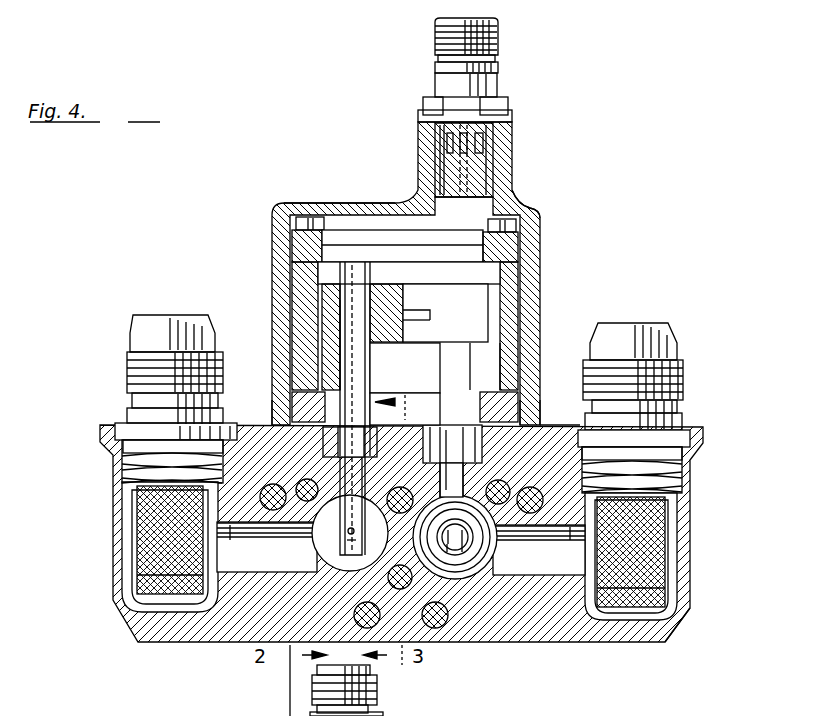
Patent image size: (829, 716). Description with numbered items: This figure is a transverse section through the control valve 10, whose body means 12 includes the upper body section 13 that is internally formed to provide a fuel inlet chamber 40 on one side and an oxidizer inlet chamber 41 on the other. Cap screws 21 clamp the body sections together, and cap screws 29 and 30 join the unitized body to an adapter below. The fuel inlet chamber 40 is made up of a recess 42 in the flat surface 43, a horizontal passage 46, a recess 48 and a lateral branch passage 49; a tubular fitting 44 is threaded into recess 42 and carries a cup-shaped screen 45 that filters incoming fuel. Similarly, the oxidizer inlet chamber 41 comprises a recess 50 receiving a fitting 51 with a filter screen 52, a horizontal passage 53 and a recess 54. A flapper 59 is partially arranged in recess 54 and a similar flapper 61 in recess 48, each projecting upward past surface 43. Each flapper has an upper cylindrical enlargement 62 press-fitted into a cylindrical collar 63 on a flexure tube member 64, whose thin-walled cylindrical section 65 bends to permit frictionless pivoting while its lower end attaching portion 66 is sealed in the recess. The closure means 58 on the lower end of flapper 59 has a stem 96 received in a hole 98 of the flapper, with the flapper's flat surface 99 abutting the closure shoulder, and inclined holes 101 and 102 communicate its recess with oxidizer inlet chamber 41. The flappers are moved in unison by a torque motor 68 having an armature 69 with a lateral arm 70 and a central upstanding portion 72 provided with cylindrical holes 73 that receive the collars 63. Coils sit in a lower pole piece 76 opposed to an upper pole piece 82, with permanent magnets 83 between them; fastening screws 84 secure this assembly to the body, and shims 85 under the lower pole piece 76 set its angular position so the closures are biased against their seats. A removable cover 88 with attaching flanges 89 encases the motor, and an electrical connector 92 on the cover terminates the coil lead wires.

The control valve 10 is at (285, 183).
The body means 12 is at (672, 652).
The first or upper body section 13 is at (690, 625).
The cap screws 21 is at (303, 523).
The cap screws 29 is at (260, 523).
The cap screws 30 is at (365, 628).
The fuel inlet chamber 40 is at (287, 573).
The oxidizer inlet chamber 41 is at (542, 575).
The recess 42 is at (132, 533).
The flat surface 43 is at (262, 420).
The fitting 44 is at (128, 396).
The cup-shaped screen 45 is at (140, 560).
The horizontal passage 46 is at (232, 543).
The recess 48 is at (328, 491).
The lateral branch passage 49 is at (339, 510).
The recess 50 is at (690, 530).
The fitting 51 is at (680, 402).
The filter screen 52 is at (688, 568).
The horizontal passage 53 is at (567, 543).
The recess 54 is at (452, 461).
The closure means 58 is at (488, 578).
The flapper 59 is at (545, 435).
The flapper 61 is at (366, 357).
The cylindrical enlargement 62 is at (356, 270).
The cylindrical collar 63 is at (378, 288).
The flexure tube member 64 is at (335, 357).
The flexible thin-walled cylindrical section 65 is at (440, 378).
The lower end attaching portion 66 is at (405, 408).
The torque motor 68 is at (542, 214).
The armature 69 is at (515, 290).
The arm 70 is at (432, 322).
The central upstanding portion 72 is at (492, 297).
The cylindrical holes 73 is at (328, 322).
The lower pole piece 76 is at (542, 410).
The upper pole piece 82 is at (500, 246).
The permanent magnets 83 is at (296, 275).
The fastening screws 84 is at (320, 217).
The shims 85 is at (270, 392).
The cover 88 is at (272, 214).
The attaching flanges 89 is at (530, 425).
The electrical connector 92 is at (498, 66).
The stem 96 is at (345, 534).
The hole 98 is at (365, 528).
The flat surface 99 is at (352, 551).
The inclined hole 101 is at (465, 565).
The inclined hole 102 is at (455, 560).